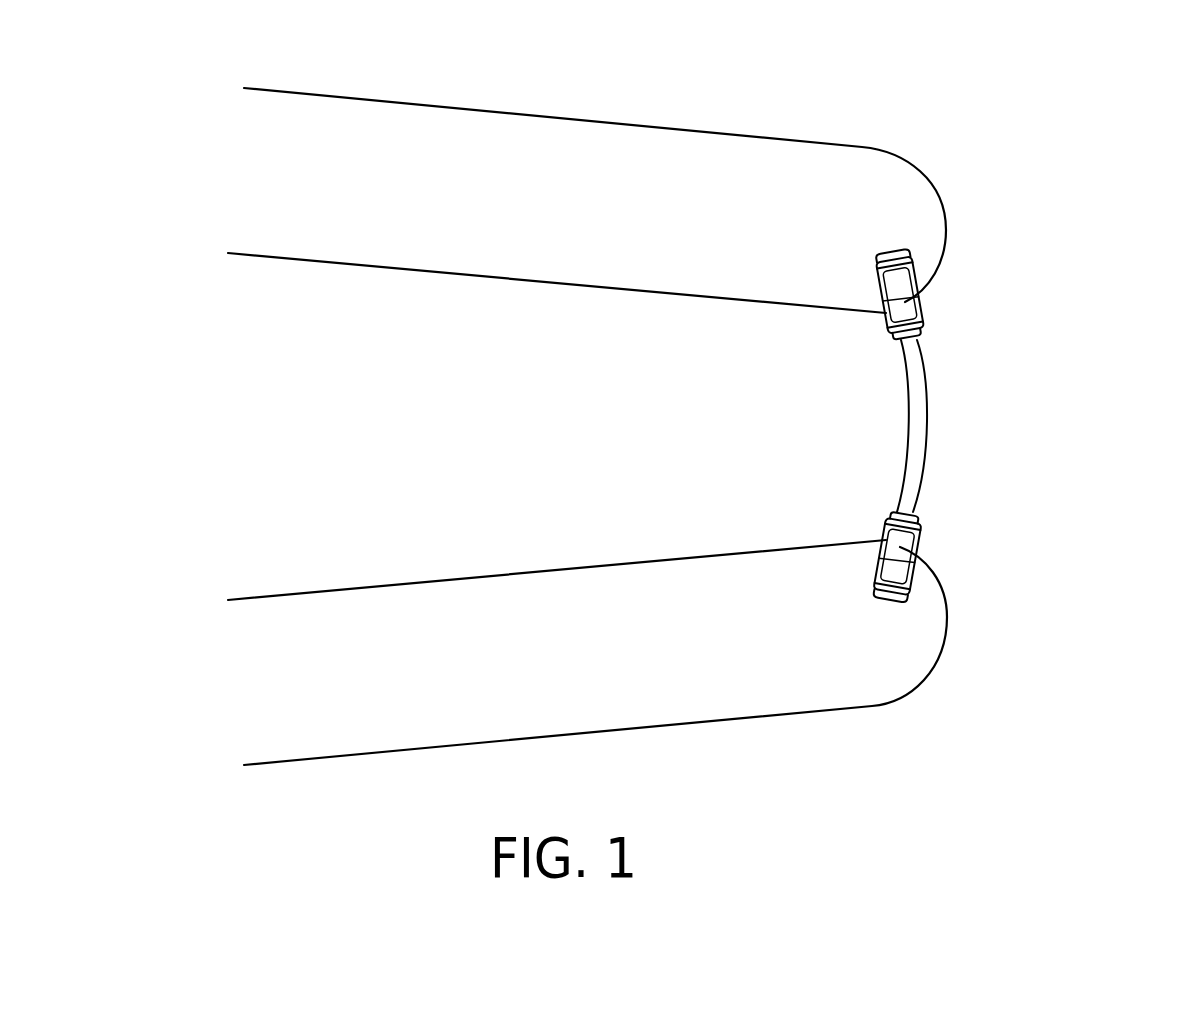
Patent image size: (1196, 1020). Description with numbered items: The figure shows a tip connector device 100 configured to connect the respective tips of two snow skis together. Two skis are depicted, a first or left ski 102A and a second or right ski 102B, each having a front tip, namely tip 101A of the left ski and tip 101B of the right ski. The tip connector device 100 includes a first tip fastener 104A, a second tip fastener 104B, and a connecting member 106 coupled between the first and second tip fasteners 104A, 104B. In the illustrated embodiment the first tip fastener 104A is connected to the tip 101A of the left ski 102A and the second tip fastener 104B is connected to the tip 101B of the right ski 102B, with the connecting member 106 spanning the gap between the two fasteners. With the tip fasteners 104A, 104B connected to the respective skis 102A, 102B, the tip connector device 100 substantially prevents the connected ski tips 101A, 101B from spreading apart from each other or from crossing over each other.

The tip connector device 100 is at (1025, 428).
The tip of first ski 101A is at (915, 218).
The tip of second ski 101B is at (908, 643).
The first ski 102A is at (522, 225).
The second ski 102B is at (538, 604).
The first tip fastener 104A is at (920, 318).
The second tip fastener 104B is at (972, 557).
The connecting member 106 is at (930, 425).